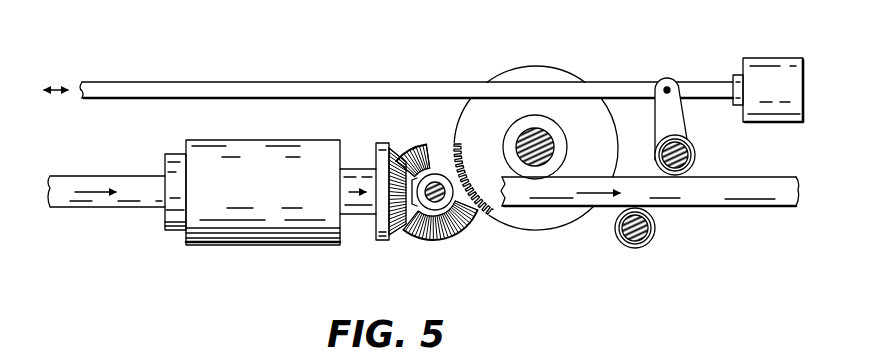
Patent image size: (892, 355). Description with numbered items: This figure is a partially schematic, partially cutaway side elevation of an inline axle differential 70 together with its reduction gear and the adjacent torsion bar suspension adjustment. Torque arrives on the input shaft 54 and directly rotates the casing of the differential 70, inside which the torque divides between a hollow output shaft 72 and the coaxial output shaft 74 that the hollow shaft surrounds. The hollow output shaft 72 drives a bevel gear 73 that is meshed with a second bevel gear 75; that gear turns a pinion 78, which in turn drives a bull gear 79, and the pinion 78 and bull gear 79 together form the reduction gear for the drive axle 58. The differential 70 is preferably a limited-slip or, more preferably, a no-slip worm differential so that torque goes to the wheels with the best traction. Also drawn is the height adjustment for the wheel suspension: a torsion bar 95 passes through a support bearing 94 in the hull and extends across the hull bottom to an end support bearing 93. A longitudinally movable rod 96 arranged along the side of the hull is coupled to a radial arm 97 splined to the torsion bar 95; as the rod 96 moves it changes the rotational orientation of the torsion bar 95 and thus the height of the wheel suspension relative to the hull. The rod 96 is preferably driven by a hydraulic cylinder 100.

The input shaft 54 is at (101, 201).
The drive axle 58 is at (549, 133).
The differential 70 is at (176, 137).
The hollow output shaft 72 is at (361, 216).
The bevel gear 73 is at (393, 241).
The output shaft 74 is at (719, 208).
The bevel gear 75 is at (459, 242).
The pinion 78 is at (443, 166).
The bull gear 79 is at (562, 230).
The end support bearing 93 is at (691, 150).
The support bearing 94 is at (656, 238).
The torsion bar 95 is at (698, 161).
The rod 96 is at (248, 83).
The radial arm 97 is at (656, 84).
The hydraulic cylinder 100 is at (752, 58).